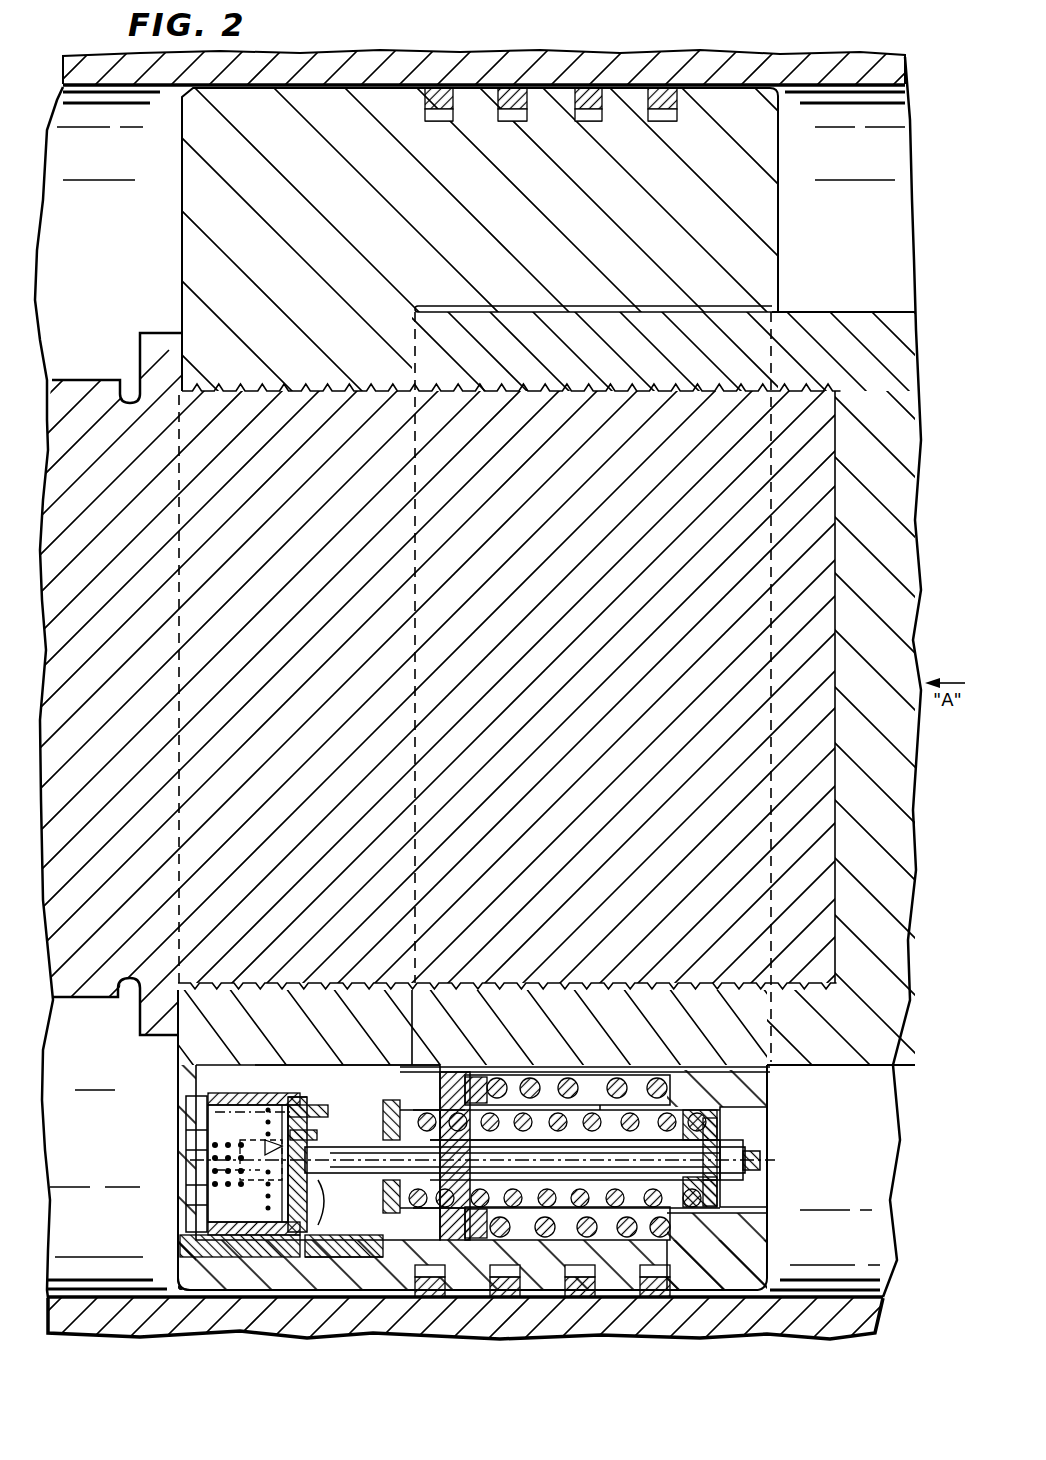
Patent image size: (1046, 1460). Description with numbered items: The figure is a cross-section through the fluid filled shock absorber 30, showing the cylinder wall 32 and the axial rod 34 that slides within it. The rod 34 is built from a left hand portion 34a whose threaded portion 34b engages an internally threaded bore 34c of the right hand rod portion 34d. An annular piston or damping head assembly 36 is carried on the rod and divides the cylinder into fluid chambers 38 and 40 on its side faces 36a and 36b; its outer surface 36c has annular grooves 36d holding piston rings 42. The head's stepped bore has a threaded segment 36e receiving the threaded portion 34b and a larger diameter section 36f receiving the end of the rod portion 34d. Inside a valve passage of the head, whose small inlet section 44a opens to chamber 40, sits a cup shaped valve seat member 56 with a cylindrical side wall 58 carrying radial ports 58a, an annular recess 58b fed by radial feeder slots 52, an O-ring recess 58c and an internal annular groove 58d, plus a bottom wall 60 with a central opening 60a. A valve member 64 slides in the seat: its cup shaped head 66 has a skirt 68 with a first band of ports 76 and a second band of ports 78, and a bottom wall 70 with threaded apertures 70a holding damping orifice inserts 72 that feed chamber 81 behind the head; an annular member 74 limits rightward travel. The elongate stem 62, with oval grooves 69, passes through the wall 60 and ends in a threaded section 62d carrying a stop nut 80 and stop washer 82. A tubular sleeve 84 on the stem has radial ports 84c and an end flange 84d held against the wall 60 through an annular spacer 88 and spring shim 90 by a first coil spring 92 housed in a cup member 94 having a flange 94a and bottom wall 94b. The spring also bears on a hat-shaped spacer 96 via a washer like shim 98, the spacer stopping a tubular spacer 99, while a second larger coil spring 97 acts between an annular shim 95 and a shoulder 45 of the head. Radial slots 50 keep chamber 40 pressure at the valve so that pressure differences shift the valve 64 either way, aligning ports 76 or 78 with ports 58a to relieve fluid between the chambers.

The shock absorber 30 is at (540, 1340).
The cylinder wall 32 is at (340, 57).
The axial rod 34 is at (95, 975).
The left hand rod portion 34a is at (155, 1030).
The threaded portion 34b is at (256, 396).
The internally threaded bore 34c is at (565, 396).
The right hand rod portion 34d is at (815, 327).
The annular piston or damping head assembly 36 is at (182, 226).
The side face 36a is at (182, 312).
The side face 36b is at (778, 226).
The outer surface 36c is at (400, 85).
The annular grooves 36d is at (438, 120).
The threaded segment 36e is at (318, 388).
The larger diameter section 36f is at (530, 307).
The fluid compartment or chamber 38 is at (107, 690).
The fluid compartment or chamber 40 is at (837, 691).
The piston rings 42 is at (512, 86).
The small diameter inlet section 44a is at (770, 1105).
The shoulder 45 is at (690, 1225).
The radial slots 50 is at (525, 1140).
The radial feeder slots 52 is at (205, 1190).
The cup shaped valve seat member 56 is at (370, 1070).
The cylindrical side wall 58 is at (477, 1138).
The radial slots or ports 58a is at (262, 1070).
The annular recess or band 58b is at (278, 1060).
The second annular recess 58c is at (200, 1292).
The annular groove 58d is at (300, 1072).
The annular bottom wall 60 is at (372, 1095).
The circular opening 60a is at (360, 1256).
The elongate stem 62 is at (460, 1100).
The threaded section 62d is at (762, 1160).
The valve member 64 is at (220, 1195).
The cup shaped head 66 is at (200, 1130).
The cylindrical skirt 68 is at (208, 1100).
The oval shaped recesses or grooves 69 is at (300, 1215).
The circular bottom wall 70 is at (300, 1190).
The threaded apertures 70a is at (318, 1097).
The damping orifice insert 72 is at (308, 1115).
The annular member 74 is at (310, 1136).
The first band of ports 76 is at (215, 1160).
The second band of ports 78 is at (265, 1195).
The stop nut 80 is at (717, 1180).
The chamber 81 is at (290, 1256).
The stop washer 82 is at (740, 1147).
The elongated tubular sleeve 84 is at (575, 1078).
The radial ports 84c is at (455, 1210).
The end flange 84d is at (410, 1108).
The annular spacer 88 is at (395, 1256).
The annular spring shim 90 is at (440, 1120).
The first coil spring 92 is at (705, 1122).
The cup member 94 is at (680, 1085).
The flange 94a is at (480, 1090).
The annular bottom wall 94b is at (700, 1200).
The annular shim 95 is at (535, 1110).
The hat-shaped spacer 96 is at (700, 1100).
The second larger coil spring 97 is at (635, 1115).
The washer like shim 98 is at (717, 1125).
The tubular spacer 99 is at (665, 1250).